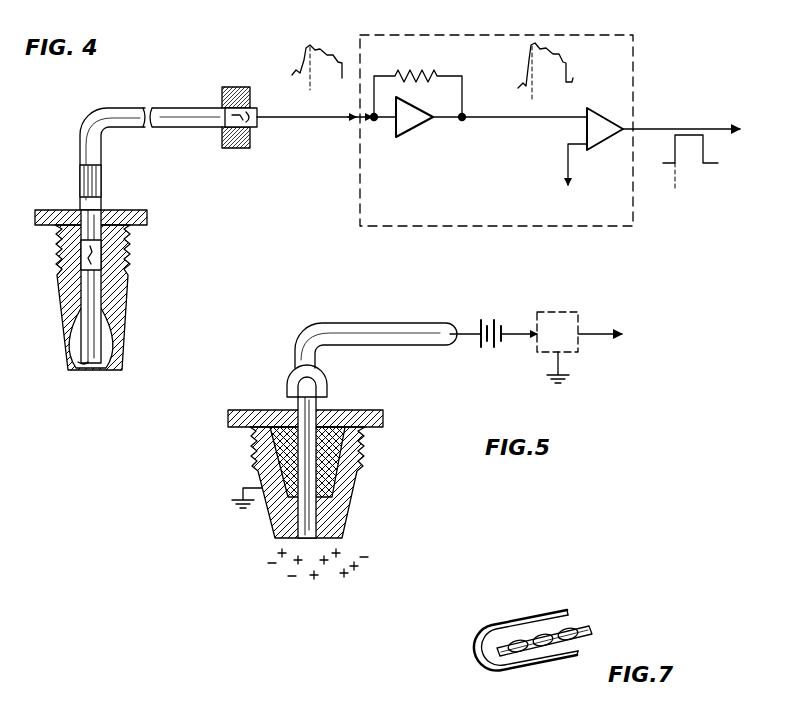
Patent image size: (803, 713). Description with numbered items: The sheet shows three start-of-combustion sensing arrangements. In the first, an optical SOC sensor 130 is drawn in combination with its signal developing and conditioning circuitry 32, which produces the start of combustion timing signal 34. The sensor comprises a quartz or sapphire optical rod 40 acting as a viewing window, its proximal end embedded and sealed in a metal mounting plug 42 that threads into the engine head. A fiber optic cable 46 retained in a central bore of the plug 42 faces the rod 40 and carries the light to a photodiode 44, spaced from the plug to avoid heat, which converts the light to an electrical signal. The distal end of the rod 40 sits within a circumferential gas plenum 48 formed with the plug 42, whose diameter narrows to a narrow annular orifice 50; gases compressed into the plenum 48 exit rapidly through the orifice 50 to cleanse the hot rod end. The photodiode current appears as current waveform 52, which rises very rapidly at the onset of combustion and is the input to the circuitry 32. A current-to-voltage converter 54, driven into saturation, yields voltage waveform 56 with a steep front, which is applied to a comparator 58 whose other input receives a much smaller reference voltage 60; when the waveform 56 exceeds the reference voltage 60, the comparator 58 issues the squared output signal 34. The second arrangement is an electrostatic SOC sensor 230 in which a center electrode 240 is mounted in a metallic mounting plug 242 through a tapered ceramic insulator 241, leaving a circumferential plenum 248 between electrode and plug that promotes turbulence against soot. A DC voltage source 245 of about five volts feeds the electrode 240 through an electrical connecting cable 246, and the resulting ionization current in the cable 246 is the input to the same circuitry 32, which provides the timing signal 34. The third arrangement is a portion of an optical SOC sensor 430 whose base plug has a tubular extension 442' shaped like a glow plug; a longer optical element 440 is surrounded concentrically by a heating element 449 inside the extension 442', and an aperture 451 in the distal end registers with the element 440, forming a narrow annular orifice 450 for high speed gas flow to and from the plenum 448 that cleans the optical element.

In FIG. 4, the signal developing and conditioning circuitry 32 is at (612, 33).
In FIG. 5, the signal developing and conditioning circuitry 32 is at (580, 354).
In FIG. 4, the start of combustion timing signal 34 is at (672, 136).
In FIG. 5, the start of combustion timing signal 34 is at (590, 332).
In FIG. 4, the optical rod 40 is at (91, 364).
In FIG. 4, the mounting plug 42 is at (148, 215).
In FIG. 4, the photodiode 44 is at (251, 131).
In FIG. 4, the fiber optic cable 46 is at (164, 108).
In FIG. 4, the circumferential gas plenum 48 is at (110, 338).
In FIG. 4, the narrow annular orifice 50 is at (78, 368).
In FIG. 4, the current waveform 52 is at (302, 72).
In FIG. 4, the current-to-voltage converter 54 is at (410, 130).
In FIG. 4, the output signal voltage waveform 56 is at (520, 88).
In FIG. 4, the comparator 58 is at (597, 140).
In FIG. 4, the reference voltage 60 is at (568, 165).
In FIG. 4, the optical SOC sensor 130 is at (185, 180).
In FIG. 5, the electrostatic SOC sensor 230 is at (260, 409).
In FIG. 5, the center electrode 240 is at (303, 528).
In FIG. 5, the ceramic insulator 241 is at (346, 448).
In FIG. 5, the mounting plug 242 is at (384, 418).
In FIG. 5, the DC voltage source 245 is at (485, 350).
In FIG. 5, the electrical connecting cable 246 is at (372, 324).
In FIG. 5, the circumferential plenum 248 is at (328, 512).
In FIG. 7, the optical SOC sensor 430 is at (558, 607).
In FIG. 7, the optical element 440 is at (515, 668).
In FIG. 7, the tubular extension 442' is at (543, 622).
In FIG. 7, the plenum 448 is at (556, 662).
In FIG. 7, the heating element 449 is at (595, 633).
In FIG. 7, the narrow annular orifice 450 is at (491, 632).
In FIG. 7, the aperture 451 is at (487, 656).